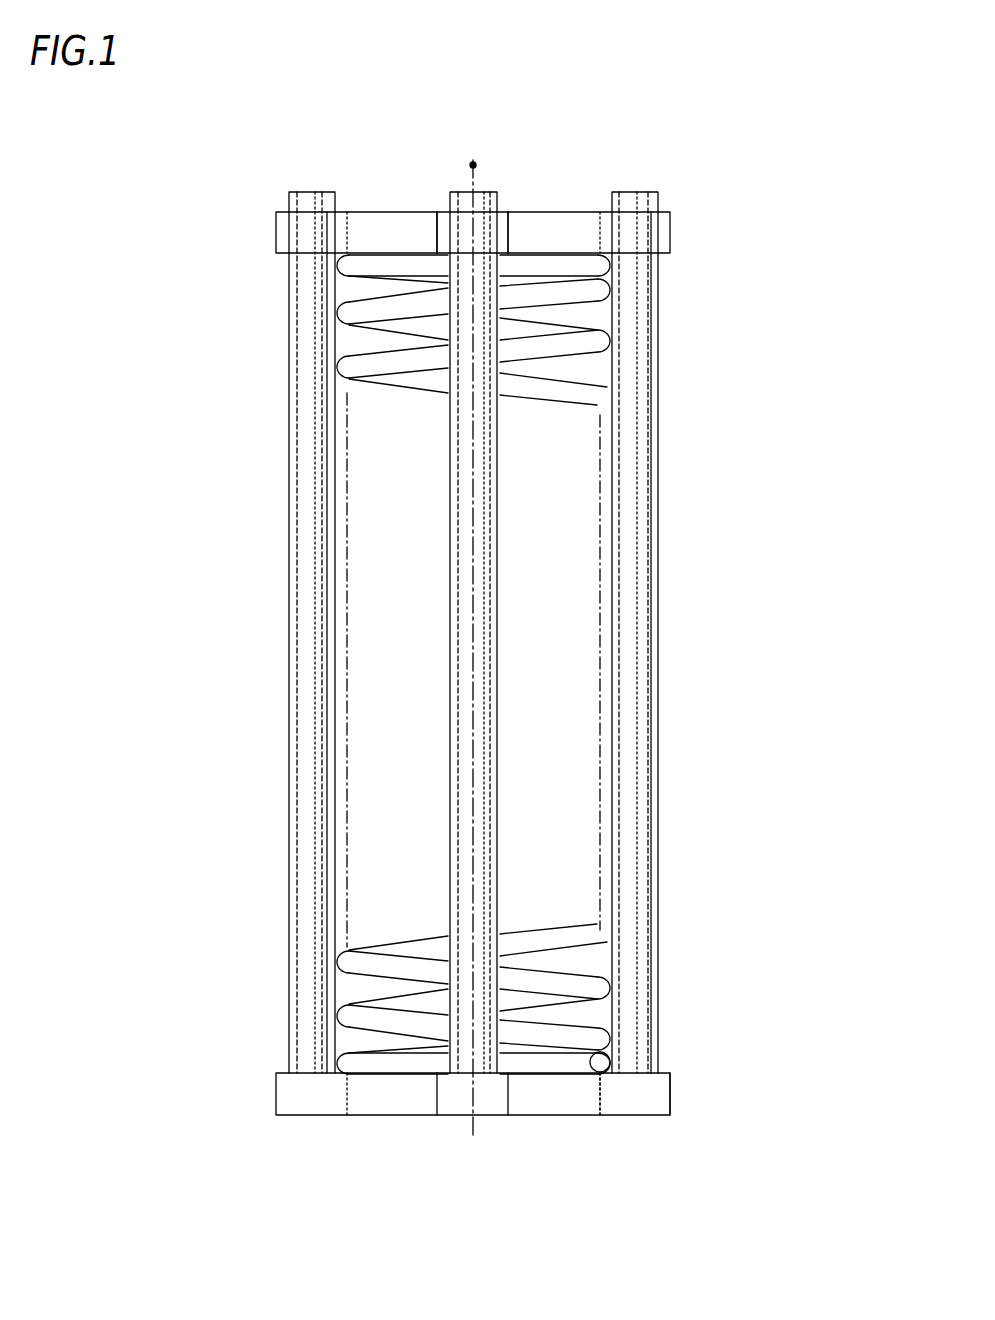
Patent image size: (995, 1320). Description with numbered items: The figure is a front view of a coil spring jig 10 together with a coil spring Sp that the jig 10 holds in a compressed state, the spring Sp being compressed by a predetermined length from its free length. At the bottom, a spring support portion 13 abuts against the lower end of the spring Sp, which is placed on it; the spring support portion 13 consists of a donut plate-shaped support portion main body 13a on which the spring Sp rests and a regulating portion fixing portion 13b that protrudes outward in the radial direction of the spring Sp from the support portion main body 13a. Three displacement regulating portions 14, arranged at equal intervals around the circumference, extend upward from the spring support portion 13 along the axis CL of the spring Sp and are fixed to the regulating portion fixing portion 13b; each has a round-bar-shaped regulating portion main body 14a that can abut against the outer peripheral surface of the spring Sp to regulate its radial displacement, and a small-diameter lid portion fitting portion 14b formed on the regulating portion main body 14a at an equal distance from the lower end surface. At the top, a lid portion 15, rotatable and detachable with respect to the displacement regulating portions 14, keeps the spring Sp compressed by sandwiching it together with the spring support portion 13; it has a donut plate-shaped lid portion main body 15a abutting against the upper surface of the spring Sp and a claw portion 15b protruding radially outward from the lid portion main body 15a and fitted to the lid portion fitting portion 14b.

The coil spring jig 10 is at (742, 184).
The spring support portion 13 is at (648, 1168).
The support portion main body 13a is at (550, 1097).
The regulating portion fixing portion 13b is at (637, 1100).
The displacement regulating portion 14 is at (190, 218).
The regulating portion main body 14a is at (305, 310).
The lid portion fitting portion 14b is at (309, 239).
The lid portion 15 is at (428, 142).
The lid portion main body 15a is at (375, 232).
The claw portion 15b is at (450, 232).
The axis CL is at (478, 165).
The coil spring Sp is at (360, 356).